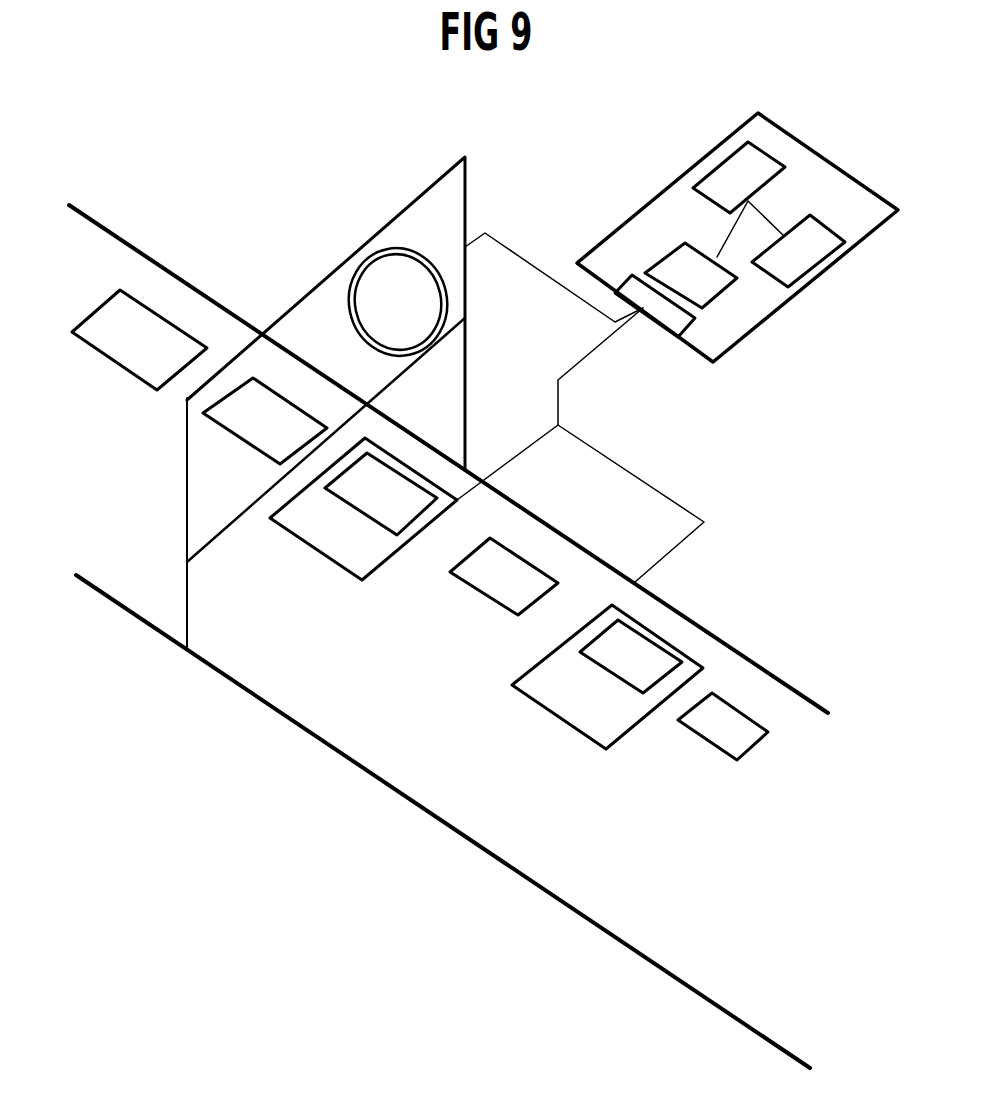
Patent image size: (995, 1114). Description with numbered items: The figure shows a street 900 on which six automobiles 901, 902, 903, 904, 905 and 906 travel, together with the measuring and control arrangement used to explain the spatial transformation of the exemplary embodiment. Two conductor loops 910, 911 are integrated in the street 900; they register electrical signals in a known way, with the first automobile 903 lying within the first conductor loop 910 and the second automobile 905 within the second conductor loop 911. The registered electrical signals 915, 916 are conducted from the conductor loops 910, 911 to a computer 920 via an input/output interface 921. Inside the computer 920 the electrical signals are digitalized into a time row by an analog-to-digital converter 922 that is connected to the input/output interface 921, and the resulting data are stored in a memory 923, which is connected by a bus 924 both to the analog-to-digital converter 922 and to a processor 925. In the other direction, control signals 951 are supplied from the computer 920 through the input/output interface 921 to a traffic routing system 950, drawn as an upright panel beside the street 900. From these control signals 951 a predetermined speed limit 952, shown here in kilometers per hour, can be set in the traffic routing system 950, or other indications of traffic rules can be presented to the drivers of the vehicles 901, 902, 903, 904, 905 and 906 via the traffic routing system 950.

The street 900 is at (430, 813).
The automobile 901 is at (127, 355).
The automobile 902 is at (263, 423).
The automobile 903 is at (370, 490).
The automobile 904 is at (475, 595).
The automobile 905 is at (620, 660).
The automobile 906 is at (710, 733).
The conductor loop 910 is at (362, 582).
The conductor loop 911 is at (557, 717).
The electrical signal 915 is at (530, 447).
The electrical signal 916 is at (668, 497).
The computer 920 is at (800, 137).
The input/output interface 921 is at (670, 317).
The analog-to-digital converter 922 is at (717, 288).
The memory 923 is at (797, 263).
The bus 924 is at (733, 233).
The processor 925 is at (733, 170).
The traffic routing system 950 is at (315, 283).
The control signal 951 is at (513, 252).
The predetermined speed limit 952 is at (380, 247).